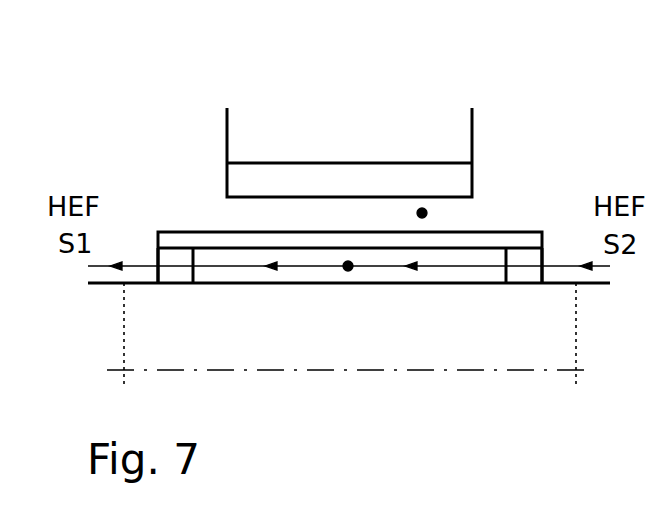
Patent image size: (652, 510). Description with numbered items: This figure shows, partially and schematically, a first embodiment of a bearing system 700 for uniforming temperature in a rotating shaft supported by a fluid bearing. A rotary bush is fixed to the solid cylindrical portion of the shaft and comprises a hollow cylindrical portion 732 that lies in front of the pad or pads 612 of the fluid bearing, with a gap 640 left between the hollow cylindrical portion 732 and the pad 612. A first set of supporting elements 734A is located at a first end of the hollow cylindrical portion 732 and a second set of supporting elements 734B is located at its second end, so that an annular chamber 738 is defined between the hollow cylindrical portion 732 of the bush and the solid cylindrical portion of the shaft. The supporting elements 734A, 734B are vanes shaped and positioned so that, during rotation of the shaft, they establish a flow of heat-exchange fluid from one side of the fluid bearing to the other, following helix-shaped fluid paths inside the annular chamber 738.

The bearing system 700 is at (184, 121).
The pad 612 is at (285, 180).
The annular chamber 738 is at (347, 262).
The gap 640 is at (422, 210).
The hollow cylindrical portion 732 is at (503, 237).
The first set of supporting elements 734A is at (175, 260).
The second set of supporting elements 734B is at (523, 258).